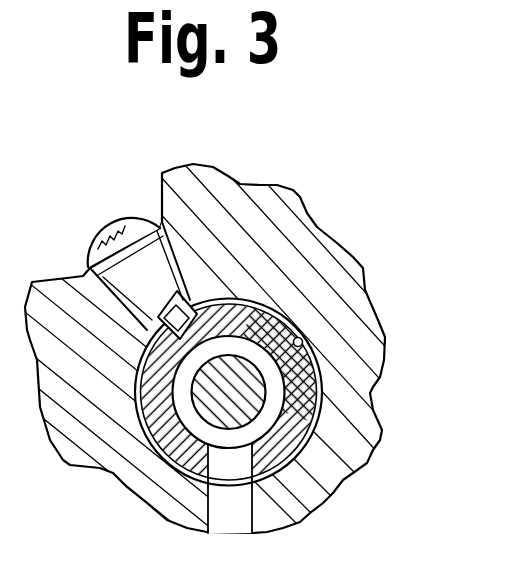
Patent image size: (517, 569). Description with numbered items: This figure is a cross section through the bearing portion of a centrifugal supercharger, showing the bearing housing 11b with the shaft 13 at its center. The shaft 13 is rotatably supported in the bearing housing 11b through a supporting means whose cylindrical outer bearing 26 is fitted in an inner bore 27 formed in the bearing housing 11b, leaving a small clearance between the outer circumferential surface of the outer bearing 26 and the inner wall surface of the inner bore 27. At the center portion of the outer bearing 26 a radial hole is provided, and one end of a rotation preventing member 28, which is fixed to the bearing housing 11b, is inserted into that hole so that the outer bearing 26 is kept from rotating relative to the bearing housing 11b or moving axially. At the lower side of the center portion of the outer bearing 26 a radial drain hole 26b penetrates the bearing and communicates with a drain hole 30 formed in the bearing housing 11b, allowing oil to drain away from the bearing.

The bearing housing 11b is at (300, 248).
The rotation preventing member 28 is at (130, 262).
The inner bore 27 is at (312, 348).
The outer bearing 26 is at (300, 403).
The drain hole 26b is at (240, 458).
The drain hole 30 is at (243, 512).
The shaft 13 is at (208, 406).